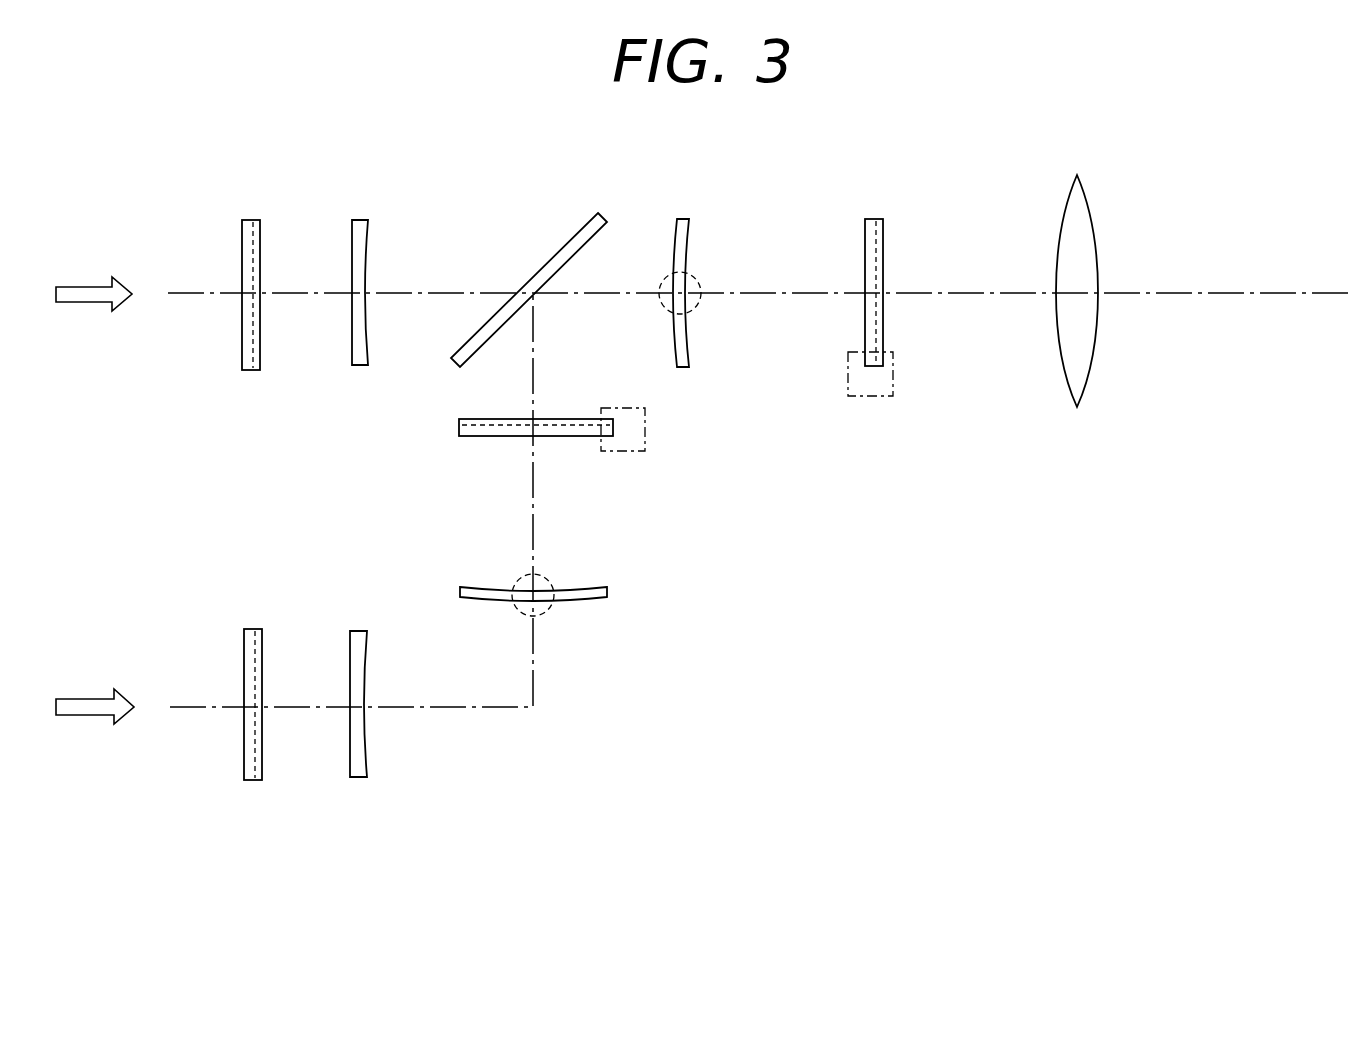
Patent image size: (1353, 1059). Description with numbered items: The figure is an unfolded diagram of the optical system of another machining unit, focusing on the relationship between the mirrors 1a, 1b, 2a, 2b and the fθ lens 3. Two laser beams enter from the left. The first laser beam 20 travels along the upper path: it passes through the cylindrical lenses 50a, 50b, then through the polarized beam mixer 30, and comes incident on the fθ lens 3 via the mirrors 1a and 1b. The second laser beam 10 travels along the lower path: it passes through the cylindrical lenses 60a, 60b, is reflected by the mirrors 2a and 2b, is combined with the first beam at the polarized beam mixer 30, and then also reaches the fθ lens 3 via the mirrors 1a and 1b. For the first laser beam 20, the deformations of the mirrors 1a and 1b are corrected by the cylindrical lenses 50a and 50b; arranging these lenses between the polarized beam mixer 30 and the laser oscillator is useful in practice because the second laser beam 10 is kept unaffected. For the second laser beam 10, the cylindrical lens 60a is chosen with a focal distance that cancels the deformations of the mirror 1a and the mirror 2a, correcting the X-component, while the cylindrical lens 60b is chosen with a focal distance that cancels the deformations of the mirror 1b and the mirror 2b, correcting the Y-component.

The first laser beam 20 is at (175, 292).
The second laser beam 10 is at (186, 705).
The cylindrical lens 50a is at (252, 220).
The cylindrical lens 50b is at (363, 220).
The polarized beam mixer 30 is at (585, 228).
The mirror 1a is at (684, 218).
The mirror 1b is at (874, 218).
The fθ lens 3 is at (1079, 192).
The mirror 2b is at (480, 440).
The mirror 2a is at (603, 592).
The cylindrical lens 60a is at (252, 782).
The cylindrical lens 60b is at (357, 779).